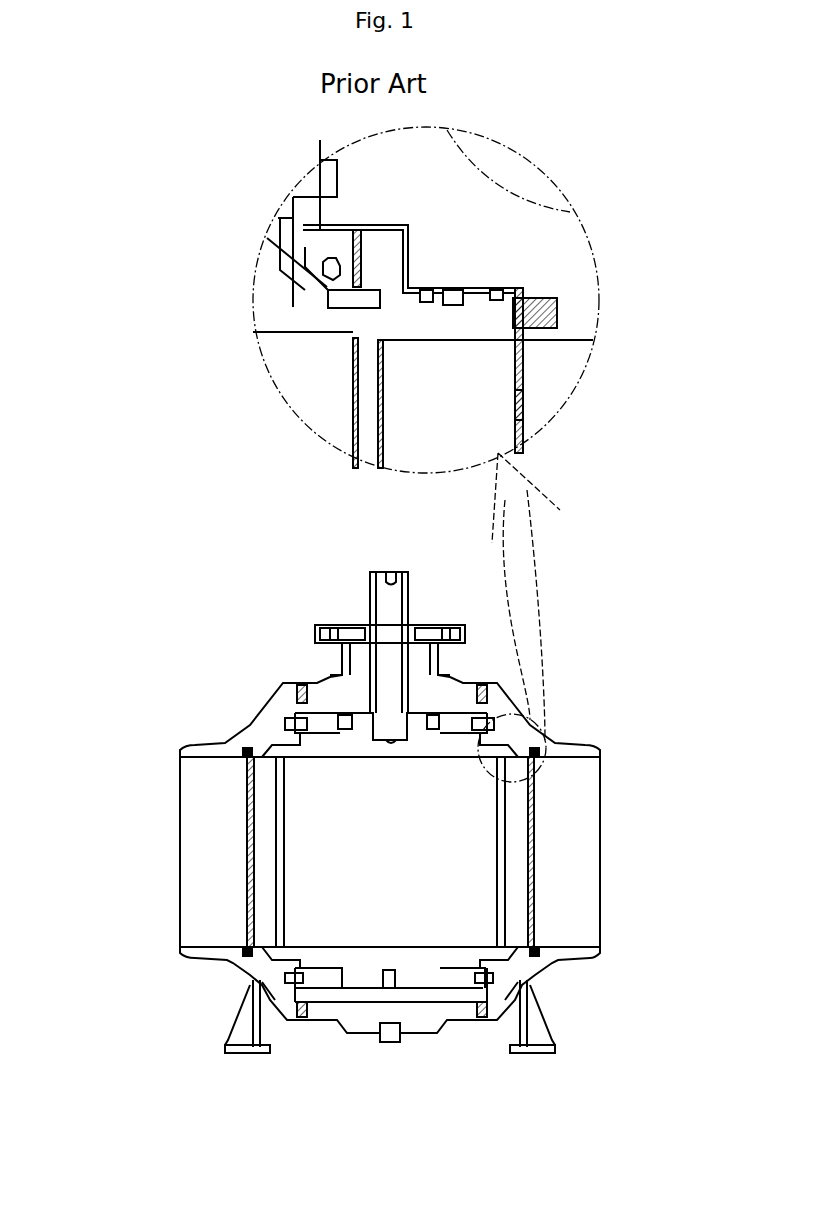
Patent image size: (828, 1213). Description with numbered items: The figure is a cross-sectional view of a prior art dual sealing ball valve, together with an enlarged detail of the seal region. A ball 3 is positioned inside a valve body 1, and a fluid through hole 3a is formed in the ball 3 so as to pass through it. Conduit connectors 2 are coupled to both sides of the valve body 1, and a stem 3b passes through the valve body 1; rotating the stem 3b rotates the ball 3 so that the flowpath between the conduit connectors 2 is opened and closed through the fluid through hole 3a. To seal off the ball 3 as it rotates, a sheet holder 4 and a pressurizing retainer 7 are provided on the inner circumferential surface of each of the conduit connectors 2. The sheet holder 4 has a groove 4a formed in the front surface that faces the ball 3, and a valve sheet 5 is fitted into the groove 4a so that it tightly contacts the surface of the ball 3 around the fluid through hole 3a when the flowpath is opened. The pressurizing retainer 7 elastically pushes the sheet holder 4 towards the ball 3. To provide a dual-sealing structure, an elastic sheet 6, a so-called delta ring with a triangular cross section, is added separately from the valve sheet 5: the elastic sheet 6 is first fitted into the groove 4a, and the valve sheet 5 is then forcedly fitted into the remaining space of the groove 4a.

The valve body 1 is at (333, 683).
The conduit connector 2 is at (255, 735).
The ball 3 is at (273, 272).
The fluid through hole 3a is at (310, 858).
The stem 3b is at (372, 597).
The sheet holder 4 is at (400, 320).
The groove 4a is at (362, 292).
The valve sheet 5 is at (347, 297).
The elastic sheet 6 is at (328, 285).
The pressurizing retainer 7 is at (560, 312).